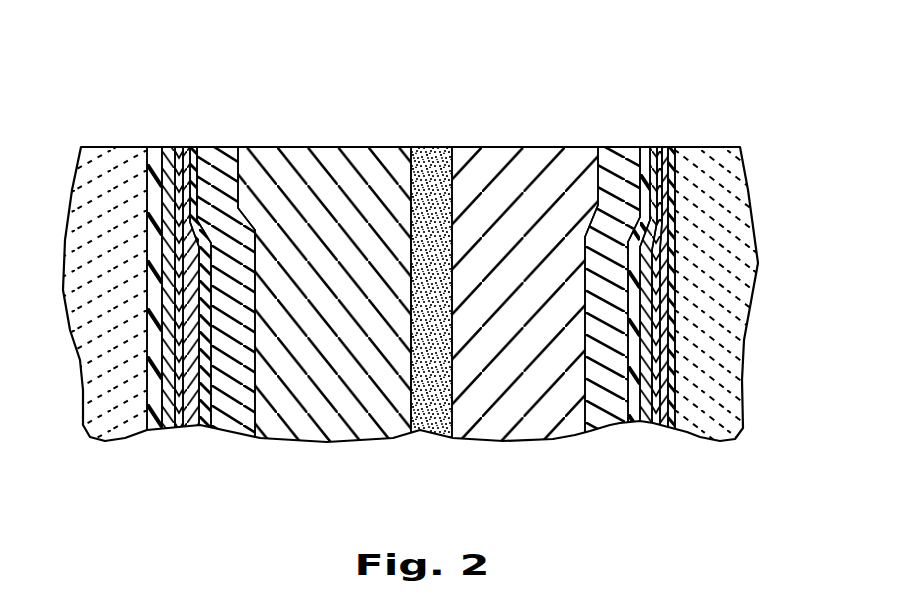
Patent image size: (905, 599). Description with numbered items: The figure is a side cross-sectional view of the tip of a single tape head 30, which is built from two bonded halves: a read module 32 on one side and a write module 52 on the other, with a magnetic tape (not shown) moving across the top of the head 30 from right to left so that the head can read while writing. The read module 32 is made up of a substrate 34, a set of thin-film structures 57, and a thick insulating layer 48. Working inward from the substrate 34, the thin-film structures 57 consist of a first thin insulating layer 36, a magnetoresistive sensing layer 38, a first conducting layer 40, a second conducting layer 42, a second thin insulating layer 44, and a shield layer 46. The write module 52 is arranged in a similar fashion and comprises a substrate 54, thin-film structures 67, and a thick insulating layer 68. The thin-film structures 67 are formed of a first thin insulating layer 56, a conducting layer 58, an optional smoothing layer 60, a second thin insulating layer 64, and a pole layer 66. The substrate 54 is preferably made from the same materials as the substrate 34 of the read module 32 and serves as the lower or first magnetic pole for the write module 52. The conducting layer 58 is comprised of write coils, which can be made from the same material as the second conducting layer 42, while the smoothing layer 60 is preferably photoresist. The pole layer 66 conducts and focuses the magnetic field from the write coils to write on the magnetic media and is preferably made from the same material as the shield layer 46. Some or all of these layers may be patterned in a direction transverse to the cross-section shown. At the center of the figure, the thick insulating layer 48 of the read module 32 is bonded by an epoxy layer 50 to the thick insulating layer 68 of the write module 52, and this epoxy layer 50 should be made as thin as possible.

The head 30 is at (492, 66).
The read module 32 is at (245, 518).
The substrate 34 is at (90, 402).
The first thin insulating layer 36 is at (135, 150).
The magnetoresistive (MR) sensing layer 38 is at (166, 428).
The first conducting layer 40 is at (182, 430).
The second conducting layer 42 is at (195, 427).
The second thin insulating layer 44 is at (216, 428).
The shield layer 46 is at (230, 172).
The thick insulating layer 48 is at (366, 165).
The epoxy layer 50 is at (436, 165).
The write module 52 is at (608, 518).
The substrate 54 is at (728, 172).
The first thin insulating layer 56 is at (670, 160).
The thin-film structures 57 is at (192, 111).
The conducting layer 58 is at (650, 334).
The smoothing layer 60 is at (660, 385).
The second thin insulating layer 64 is at (636, 425).
The pole layer 66 is at (596, 428).
The thin-film structures 67 is at (637, 112).
The thick insulating layer 68 is at (538, 165).